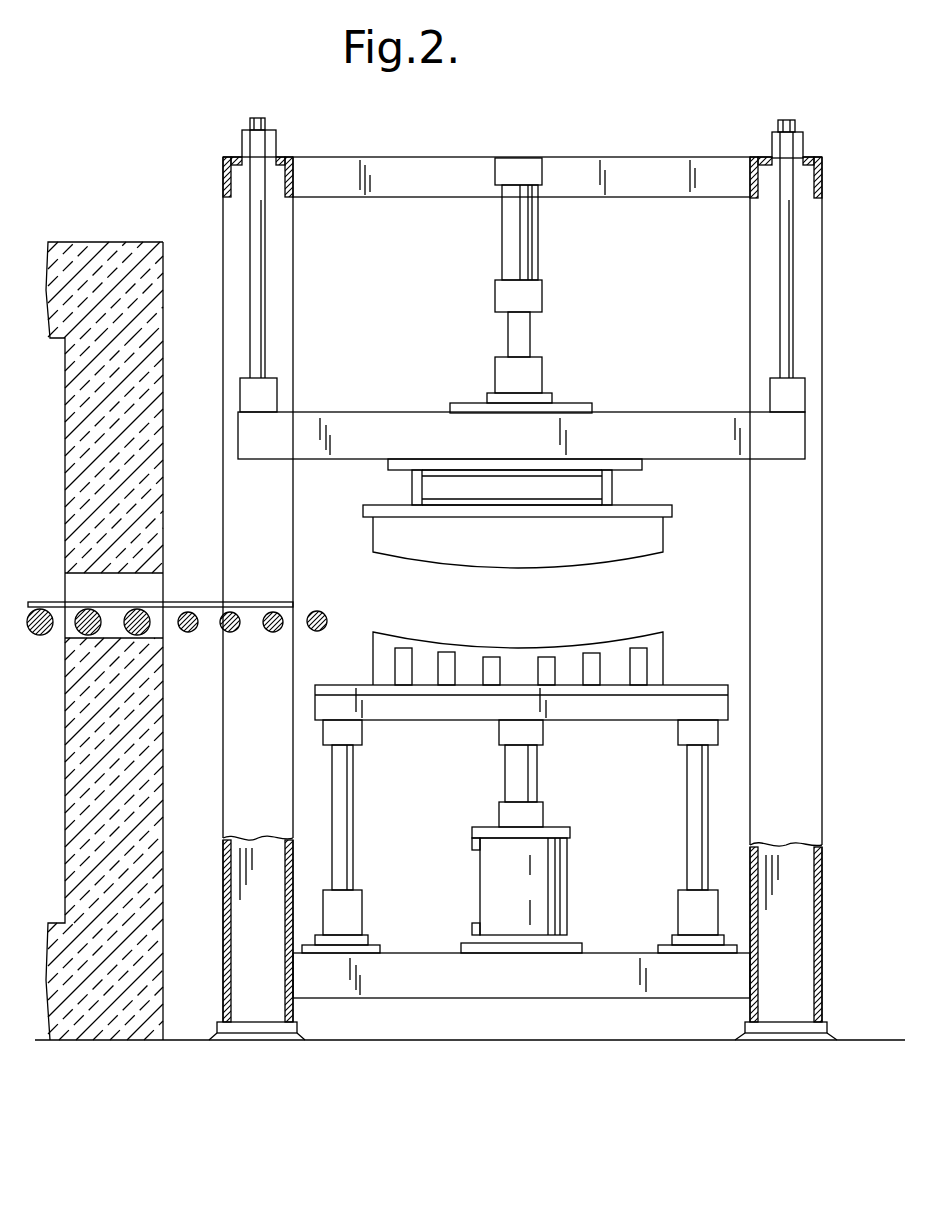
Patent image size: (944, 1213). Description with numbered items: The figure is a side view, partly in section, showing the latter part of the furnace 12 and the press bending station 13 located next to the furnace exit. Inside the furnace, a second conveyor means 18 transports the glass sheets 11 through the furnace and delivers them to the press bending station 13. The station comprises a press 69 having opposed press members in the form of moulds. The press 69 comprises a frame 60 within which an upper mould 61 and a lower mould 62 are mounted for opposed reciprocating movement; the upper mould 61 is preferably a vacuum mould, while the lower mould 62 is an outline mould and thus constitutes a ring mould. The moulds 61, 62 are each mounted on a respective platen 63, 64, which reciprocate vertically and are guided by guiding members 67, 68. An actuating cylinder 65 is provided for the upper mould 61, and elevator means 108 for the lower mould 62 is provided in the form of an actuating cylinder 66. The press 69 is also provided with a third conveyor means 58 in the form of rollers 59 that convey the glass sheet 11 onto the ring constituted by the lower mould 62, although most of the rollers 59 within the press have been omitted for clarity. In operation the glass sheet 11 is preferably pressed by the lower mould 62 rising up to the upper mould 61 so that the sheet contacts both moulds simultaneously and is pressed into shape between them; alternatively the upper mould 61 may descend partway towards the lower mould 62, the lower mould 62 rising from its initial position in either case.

The glass sheet 11 is at (172, 602).
The furnace 12 is at (104, 142).
The press bending station 13 is at (511, 86).
The second conveyor means 18 is at (58, 604).
The third conveyor means 58 is at (218, 627).
The rollers 59 is at (322, 610).
The frame 60 is at (338, 180).
The upper mould 61 is at (388, 530).
The lower mould 62 is at (660, 661).
The platen 63 is at (348, 428).
The platen 64 is at (592, 712).
The actuating cylinder 65 is at (510, 228).
The actuating cylinder 66 is at (550, 868).
The guiding members 67 is at (258, 240).
The guiding members 68 is at (351, 827).
The press 69 is at (523, 566).
The elevator means 108 is at (718, 815).